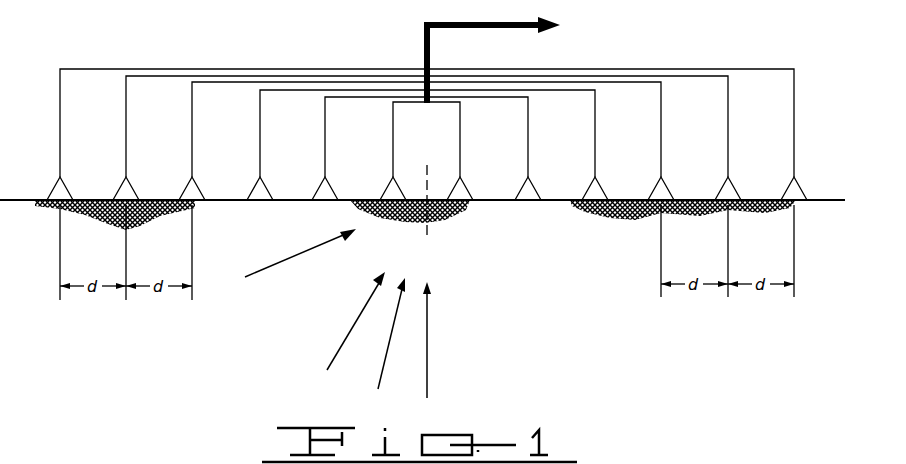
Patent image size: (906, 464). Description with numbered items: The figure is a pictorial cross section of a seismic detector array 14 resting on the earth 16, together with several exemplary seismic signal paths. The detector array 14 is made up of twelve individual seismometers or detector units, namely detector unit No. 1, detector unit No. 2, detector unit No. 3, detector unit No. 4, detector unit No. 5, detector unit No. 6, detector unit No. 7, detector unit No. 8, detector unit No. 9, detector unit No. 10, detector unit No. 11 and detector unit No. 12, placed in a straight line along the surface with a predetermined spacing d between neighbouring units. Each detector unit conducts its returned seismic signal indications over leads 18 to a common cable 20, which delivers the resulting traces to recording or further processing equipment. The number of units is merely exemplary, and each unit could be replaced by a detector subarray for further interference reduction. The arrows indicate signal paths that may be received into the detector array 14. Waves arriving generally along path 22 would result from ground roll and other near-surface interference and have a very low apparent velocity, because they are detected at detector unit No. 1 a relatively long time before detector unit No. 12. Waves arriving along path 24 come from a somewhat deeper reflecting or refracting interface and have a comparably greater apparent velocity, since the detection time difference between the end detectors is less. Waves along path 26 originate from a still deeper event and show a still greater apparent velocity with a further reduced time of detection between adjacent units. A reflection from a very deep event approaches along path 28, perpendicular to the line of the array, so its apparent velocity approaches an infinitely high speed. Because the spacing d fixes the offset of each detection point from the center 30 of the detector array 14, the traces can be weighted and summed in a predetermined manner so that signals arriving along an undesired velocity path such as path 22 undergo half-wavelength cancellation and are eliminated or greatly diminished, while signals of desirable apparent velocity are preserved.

The detector unit No. 1 is at (56, 188).
The detector unit No. 2 is at (121, 188).
The detector unit No. 3 is at (187, 188).
The detector unit No. 4 is at (255, 188).
The detector unit No. 5 is at (321, 188).
The detector unit No. 6 is at (389, 188).
The detector unit No. 7 is at (456, 188).
The detector unit No. 8 is at (524, 188).
The detector unit No. 9 is at (591, 188).
The detector unit No. 10 is at (654, 188).
The detector unit No. 11 is at (722, 188).
The detector unit No. 12 is at (787, 188).
The detector array 14 is at (416, 102).
The earth 16 is at (596, 333).
The leads 18 is at (60, 102).
The cable 20 is at (470, 30).
The seismic signal path 22 is at (270, 268).
The seismic signal path 24 is at (343, 341).
The seismic signal path 26 is at (383, 370).
The seismic signal path 28 is at (428, 370).
The center of detector array 30 is at (430, 228).